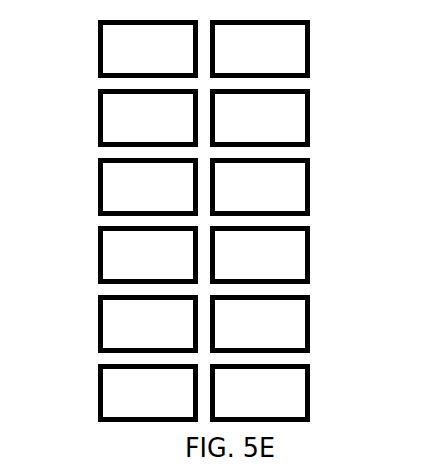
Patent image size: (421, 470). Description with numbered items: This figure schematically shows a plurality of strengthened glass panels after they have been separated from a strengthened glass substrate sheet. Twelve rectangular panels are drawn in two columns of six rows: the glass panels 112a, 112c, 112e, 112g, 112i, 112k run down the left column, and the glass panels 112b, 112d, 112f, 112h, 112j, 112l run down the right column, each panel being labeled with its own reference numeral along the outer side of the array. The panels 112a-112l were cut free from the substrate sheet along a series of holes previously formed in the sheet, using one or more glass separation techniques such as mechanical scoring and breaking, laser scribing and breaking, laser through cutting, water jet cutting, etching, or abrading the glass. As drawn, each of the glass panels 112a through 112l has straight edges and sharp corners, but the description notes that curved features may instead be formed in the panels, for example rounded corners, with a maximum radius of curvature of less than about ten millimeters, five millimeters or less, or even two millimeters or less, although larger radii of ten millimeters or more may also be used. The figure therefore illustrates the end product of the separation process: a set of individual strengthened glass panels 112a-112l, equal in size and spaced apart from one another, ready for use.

The glass panel 112a is at (98, 53).
The glass panel 112b is at (310, 53).
The glass panel 112c is at (98, 120).
The glass panel 112d is at (310, 120).
The glass panel 112e is at (98, 190).
The glass panel 112f is at (310, 188).
The glass panel 112g is at (98, 255).
The glass panel 112h is at (310, 255).
The glass panel 112i is at (98, 323).
The glass panel 112j is at (310, 320).
The glass panel 112k is at (98, 392).
The glass panel 112l is at (310, 392).